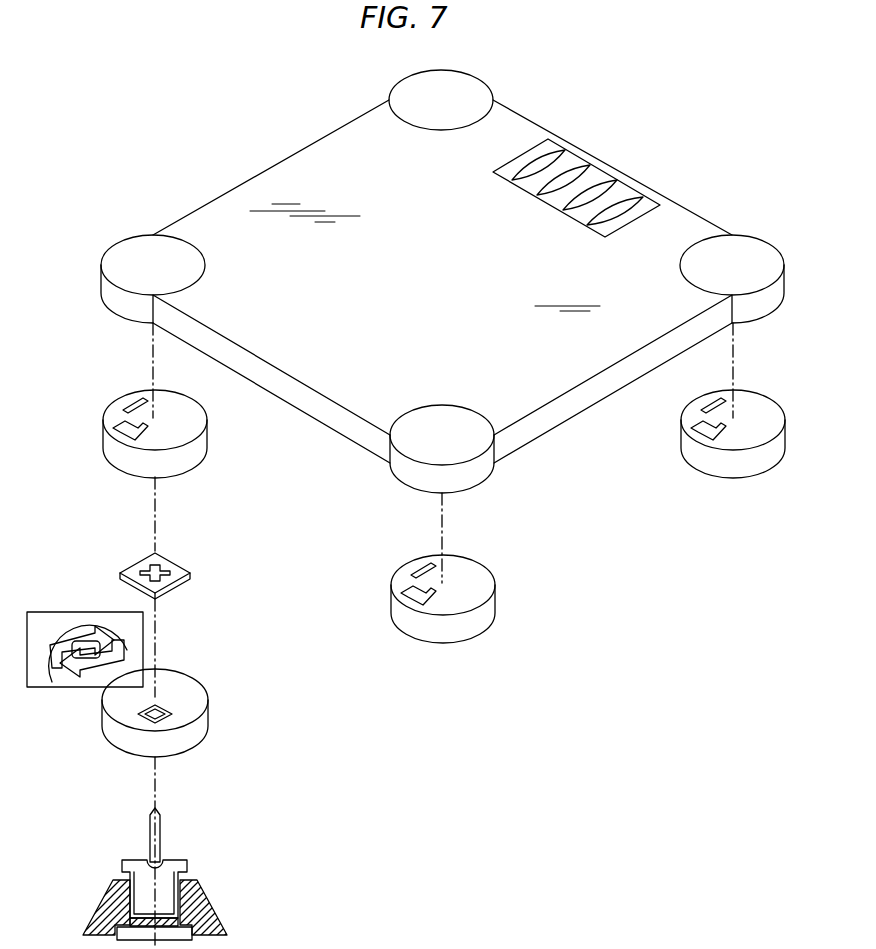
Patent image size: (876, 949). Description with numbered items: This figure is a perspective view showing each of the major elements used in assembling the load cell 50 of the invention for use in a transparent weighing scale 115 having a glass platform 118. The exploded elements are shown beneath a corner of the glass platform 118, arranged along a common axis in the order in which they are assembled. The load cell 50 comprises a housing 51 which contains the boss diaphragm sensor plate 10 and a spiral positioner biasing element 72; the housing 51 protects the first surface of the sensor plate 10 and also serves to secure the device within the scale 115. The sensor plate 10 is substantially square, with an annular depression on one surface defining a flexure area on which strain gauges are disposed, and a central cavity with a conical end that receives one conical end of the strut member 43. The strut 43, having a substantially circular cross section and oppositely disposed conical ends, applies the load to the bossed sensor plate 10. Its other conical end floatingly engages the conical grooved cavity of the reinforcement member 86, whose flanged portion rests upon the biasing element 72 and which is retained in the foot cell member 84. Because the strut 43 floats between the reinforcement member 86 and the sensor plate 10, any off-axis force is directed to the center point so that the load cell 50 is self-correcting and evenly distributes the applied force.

The glass platform 118 is at (298, 178).
The load cell 50 is at (483, 66).
The housing 51 is at (118, 412).
The transparent weighing scale 115 is at (556, 441).
The boss diaphragm sensor plate 10 is at (140, 568).
The spiral positioner biasing element 72 is at (190, 688).
The strut member 43 is at (162, 830).
The reinforcement member 86 is at (122, 868).
The foot cell member 84 is at (210, 893).